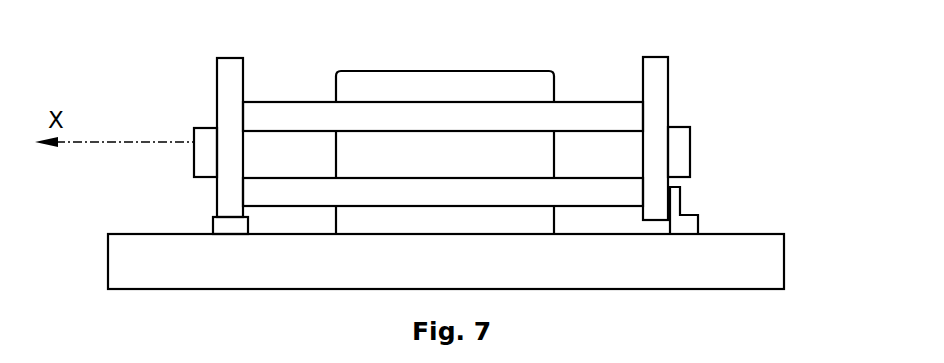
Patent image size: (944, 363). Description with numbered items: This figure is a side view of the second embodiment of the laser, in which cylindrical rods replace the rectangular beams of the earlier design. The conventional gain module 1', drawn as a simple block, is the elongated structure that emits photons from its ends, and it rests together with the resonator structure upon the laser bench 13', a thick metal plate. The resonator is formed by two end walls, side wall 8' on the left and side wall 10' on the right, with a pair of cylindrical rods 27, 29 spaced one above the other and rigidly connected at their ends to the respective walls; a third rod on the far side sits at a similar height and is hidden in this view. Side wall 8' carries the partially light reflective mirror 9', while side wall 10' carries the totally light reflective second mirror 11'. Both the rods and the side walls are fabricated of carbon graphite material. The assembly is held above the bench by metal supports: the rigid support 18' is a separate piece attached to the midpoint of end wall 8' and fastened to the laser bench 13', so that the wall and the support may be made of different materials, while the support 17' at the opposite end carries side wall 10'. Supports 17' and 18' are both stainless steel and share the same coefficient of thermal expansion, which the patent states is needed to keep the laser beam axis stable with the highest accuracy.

The gain module 1' is at (440, 132).
The side wall 8' is at (211, 121).
The mirror 9' is at (186, 133).
The side wall 10' is at (687, 135).
The second mirror 11' is at (711, 141).
The laser bench 13' is at (436, 237).
The support 17' is at (706, 204).
The rigid support 18' is at (205, 210).
The cylindrical rod 27 is at (305, 102).
The cylindrical rod 29 is at (298, 178).